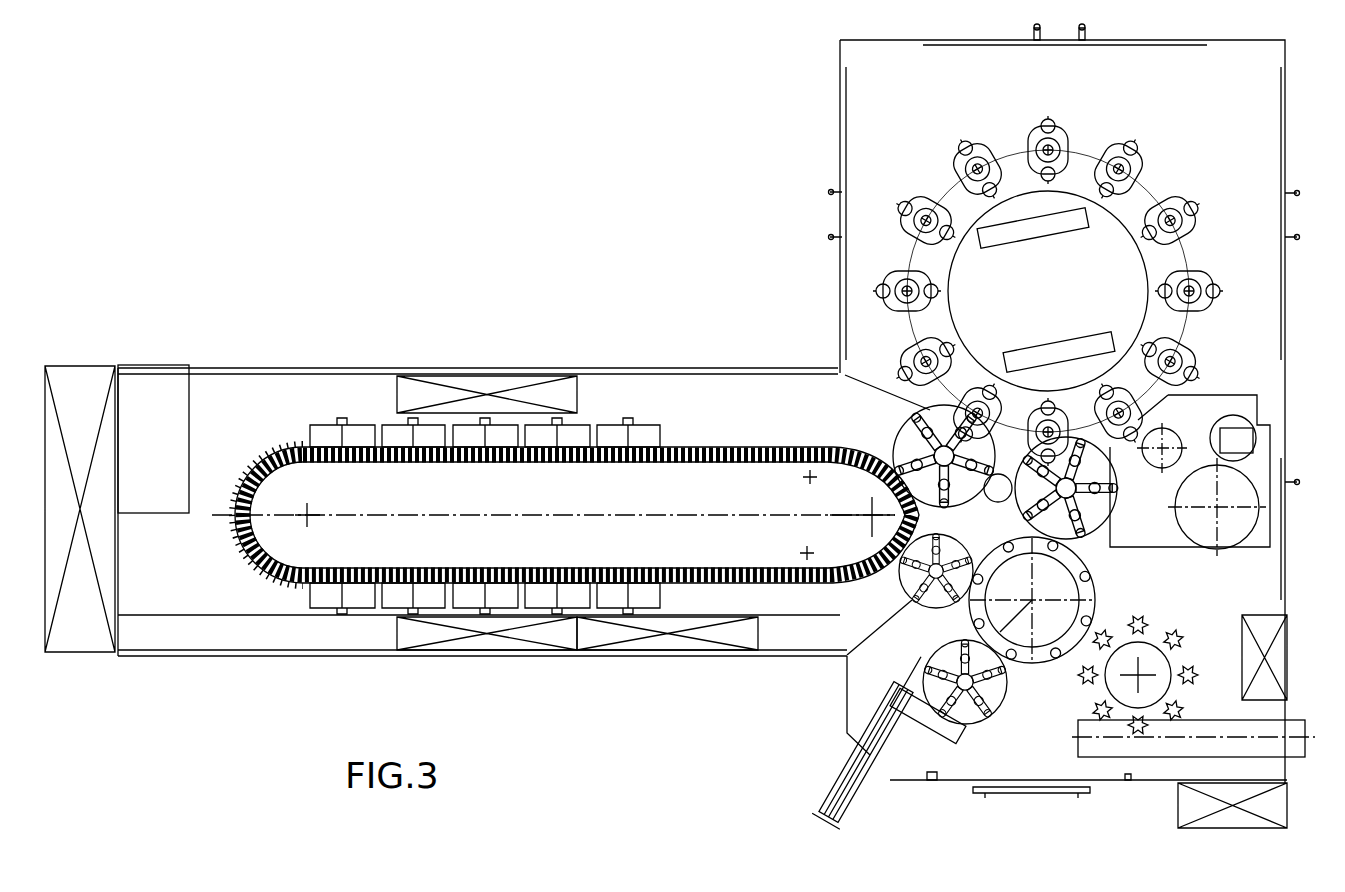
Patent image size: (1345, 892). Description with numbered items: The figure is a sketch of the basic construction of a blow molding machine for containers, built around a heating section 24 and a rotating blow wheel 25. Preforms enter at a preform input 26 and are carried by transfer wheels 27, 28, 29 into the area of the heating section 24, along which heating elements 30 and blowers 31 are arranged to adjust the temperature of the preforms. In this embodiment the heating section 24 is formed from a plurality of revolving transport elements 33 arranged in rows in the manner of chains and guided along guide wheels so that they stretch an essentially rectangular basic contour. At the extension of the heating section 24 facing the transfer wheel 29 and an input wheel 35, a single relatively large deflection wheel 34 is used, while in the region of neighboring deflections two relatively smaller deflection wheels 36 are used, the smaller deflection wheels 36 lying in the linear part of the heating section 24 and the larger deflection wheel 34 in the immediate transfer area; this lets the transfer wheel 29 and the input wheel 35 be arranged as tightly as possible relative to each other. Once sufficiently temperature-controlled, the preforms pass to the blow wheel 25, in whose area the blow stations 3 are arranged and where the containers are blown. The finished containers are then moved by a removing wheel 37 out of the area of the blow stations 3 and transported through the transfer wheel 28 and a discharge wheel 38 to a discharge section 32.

The blow stations 3 is at (893, 268).
The heating section 24 is at (617, 405).
The blow wheel 25 is at (985, 212).
The preform input 26 is at (878, 783).
The transfer wheel 27 is at (980, 715).
The transfer wheel 28 is at (1033, 665).
The transfer wheel 29 is at (846, 696).
The heating elements 30 is at (360, 430).
The blowers 31 is at (480, 383).
The discharge section 32 is at (1293, 745).
The transport elements 33 is at (277, 580).
The deflection wheel 34 is at (308, 518).
The input wheel 35 is at (915, 405).
The deflection wheels 36 is at (810, 477).
The removing wheel 37 is at (1113, 505).
The discharge wheel 38 is at (1147, 688).